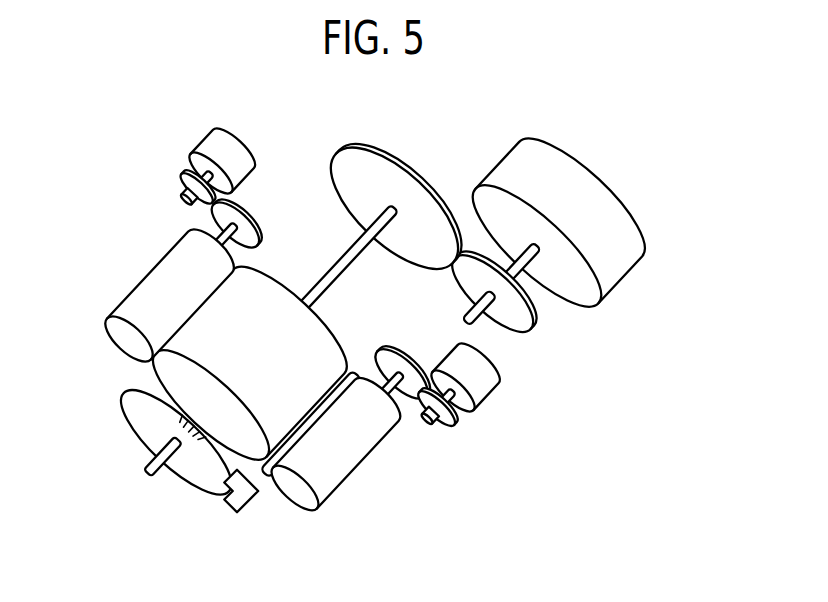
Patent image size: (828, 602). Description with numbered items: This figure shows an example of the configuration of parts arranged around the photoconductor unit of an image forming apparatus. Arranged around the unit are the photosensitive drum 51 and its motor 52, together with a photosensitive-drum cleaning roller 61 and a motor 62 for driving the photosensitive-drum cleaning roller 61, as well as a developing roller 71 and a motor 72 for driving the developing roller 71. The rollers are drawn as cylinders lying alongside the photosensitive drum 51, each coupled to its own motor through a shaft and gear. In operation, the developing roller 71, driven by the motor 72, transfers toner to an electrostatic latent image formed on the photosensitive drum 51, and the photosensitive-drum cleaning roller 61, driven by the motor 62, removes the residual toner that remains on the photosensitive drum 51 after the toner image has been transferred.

The photosensitive drum 51 is at (153, 386).
The motor 52 is at (582, 168).
The photosensitive-drum cleaning roller 61 is at (156, 268).
The motor 62 is at (234, 145).
The developing roller 71 is at (356, 458).
The motor 72 is at (490, 390).